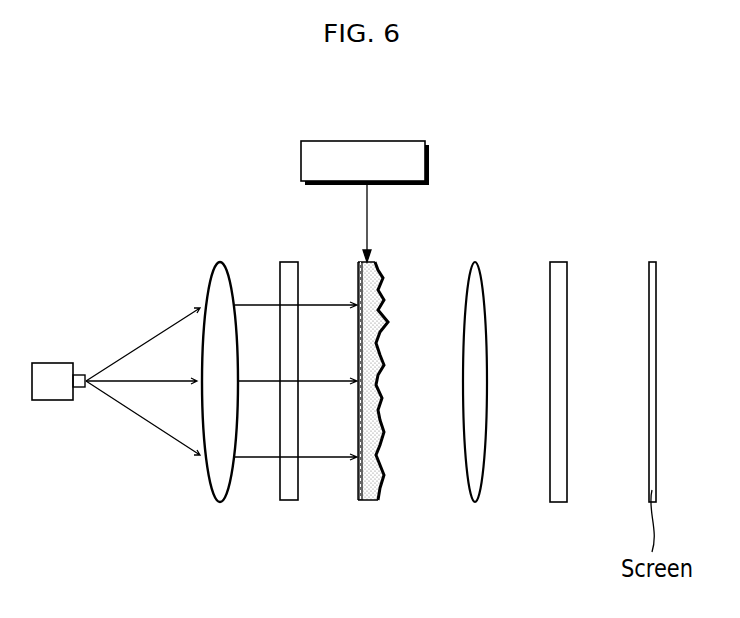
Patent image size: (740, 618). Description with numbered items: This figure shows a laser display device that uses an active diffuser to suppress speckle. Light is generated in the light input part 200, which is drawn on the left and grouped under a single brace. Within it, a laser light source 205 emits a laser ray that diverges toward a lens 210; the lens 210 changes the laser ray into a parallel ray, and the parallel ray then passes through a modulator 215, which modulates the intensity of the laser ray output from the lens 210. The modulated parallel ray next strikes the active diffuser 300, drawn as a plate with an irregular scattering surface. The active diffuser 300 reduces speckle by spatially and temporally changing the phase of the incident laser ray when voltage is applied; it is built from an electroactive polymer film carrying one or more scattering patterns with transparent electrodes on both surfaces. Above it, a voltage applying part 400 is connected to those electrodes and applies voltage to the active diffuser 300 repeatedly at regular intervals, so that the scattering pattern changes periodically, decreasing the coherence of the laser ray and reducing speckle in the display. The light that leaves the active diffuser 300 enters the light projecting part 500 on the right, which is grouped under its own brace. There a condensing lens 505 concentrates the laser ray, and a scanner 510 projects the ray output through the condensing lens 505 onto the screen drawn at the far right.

The light input part 200 is at (288, 243).
The laser light source 205 is at (55, 393).
The lens 210 is at (222, 490).
The modulator 215 is at (291, 490).
The active diffuser 300 is at (370, 508).
The voltage applying part 400 is at (361, 141).
The light projecting part 500 is at (557, 243).
The condensing lens 505 is at (475, 490).
The scanner 510 is at (557, 490).